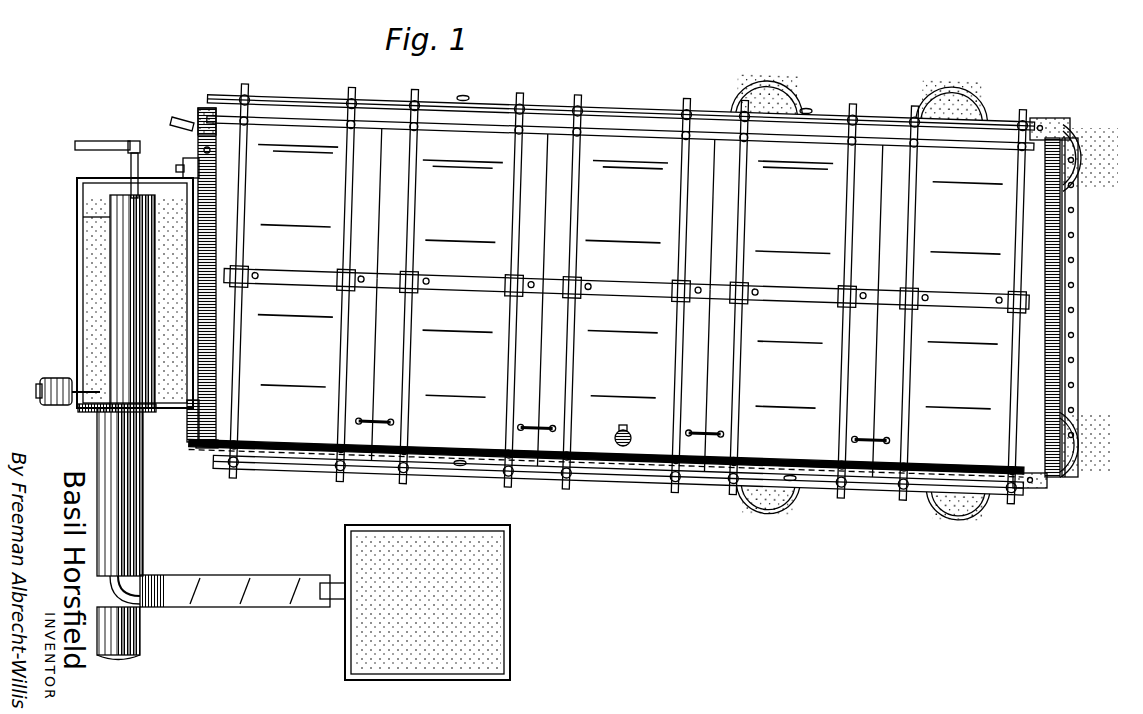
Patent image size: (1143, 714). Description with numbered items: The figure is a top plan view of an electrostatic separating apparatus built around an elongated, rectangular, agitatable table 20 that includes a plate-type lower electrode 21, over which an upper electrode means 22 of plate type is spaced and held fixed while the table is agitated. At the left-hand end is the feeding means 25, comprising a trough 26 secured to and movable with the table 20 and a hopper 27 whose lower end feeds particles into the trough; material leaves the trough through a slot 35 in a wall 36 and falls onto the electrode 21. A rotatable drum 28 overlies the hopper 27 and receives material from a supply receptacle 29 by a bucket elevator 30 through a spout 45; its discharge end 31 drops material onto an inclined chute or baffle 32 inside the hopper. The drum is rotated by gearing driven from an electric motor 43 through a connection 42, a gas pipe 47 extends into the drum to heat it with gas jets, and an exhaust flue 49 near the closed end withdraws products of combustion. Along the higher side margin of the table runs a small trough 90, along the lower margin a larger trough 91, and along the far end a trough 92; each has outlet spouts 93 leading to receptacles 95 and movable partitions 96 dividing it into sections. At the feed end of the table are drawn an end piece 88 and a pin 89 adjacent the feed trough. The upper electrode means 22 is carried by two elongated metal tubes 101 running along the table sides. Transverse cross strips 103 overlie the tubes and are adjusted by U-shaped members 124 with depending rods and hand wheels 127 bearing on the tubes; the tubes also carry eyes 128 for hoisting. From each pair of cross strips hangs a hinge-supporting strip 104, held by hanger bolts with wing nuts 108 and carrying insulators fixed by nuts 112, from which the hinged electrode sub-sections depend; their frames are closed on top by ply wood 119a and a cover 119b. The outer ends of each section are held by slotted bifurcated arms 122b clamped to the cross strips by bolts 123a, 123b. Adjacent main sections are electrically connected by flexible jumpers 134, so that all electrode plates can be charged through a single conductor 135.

The table 20 is at (198, 446).
The electrode 21 is at (203, 450).
The upper electrode means 22 is at (278, 432).
The feeding means 25 is at (76, 293).
The trough 26 is at (182, 160).
The hopper 27 is at (76, 186).
The rotatable drum 28 is at (145, 540).
The supply receptacle 29 is at (510, 566).
The bucket elevator 30 is at (240, 574).
The discharge end 31 is at (110, 212).
The inclined chute or baffle 32 is at (86, 205).
The aperture or slot 35 is at (176, 168).
The wall 36 is at (190, 424).
The drive shaft 42 is at (90, 392).
The electric motor 43 is at (50, 384).
The spout 45 is at (135, 578).
The gas pipe 47 is at (95, 141).
The exhaust flue 49 is at (142, 638).
The end block 88 is at (207, 107).
The pin 89 is at (184, 117).
The trough 90 is at (1030, 489).
The trough 91 is at (1056, 118).
The trough 92 is at (1062, 380).
The outlet spouts 93 is at (1040, 124).
The receptacles 95 is at (776, 76).
The movable partitions 96 is at (1076, 262).
The elongated metal tube 101 is at (290, 92).
The cross strips 103 is at (354, 84).
The hinge-supporting strip 104 is at (286, 270).
The wing nut 108 is at (342, 284).
The nut 112 is at (258, 268).
The ply wood 119a is at (312, 432).
The cover 119b is at (722, 128).
The slotted bifurcated arm 122b is at (253, 116).
The bolt 123a is at (850, 460).
The bolt 123b is at (680, 123).
The U-shaped member 124 is at (246, 90).
The hand wheel 127 is at (420, 96).
The eyes 128 is at (464, 95).
The flexible jumpers 134 is at (376, 418).
The conductor 135 is at (623, 448).